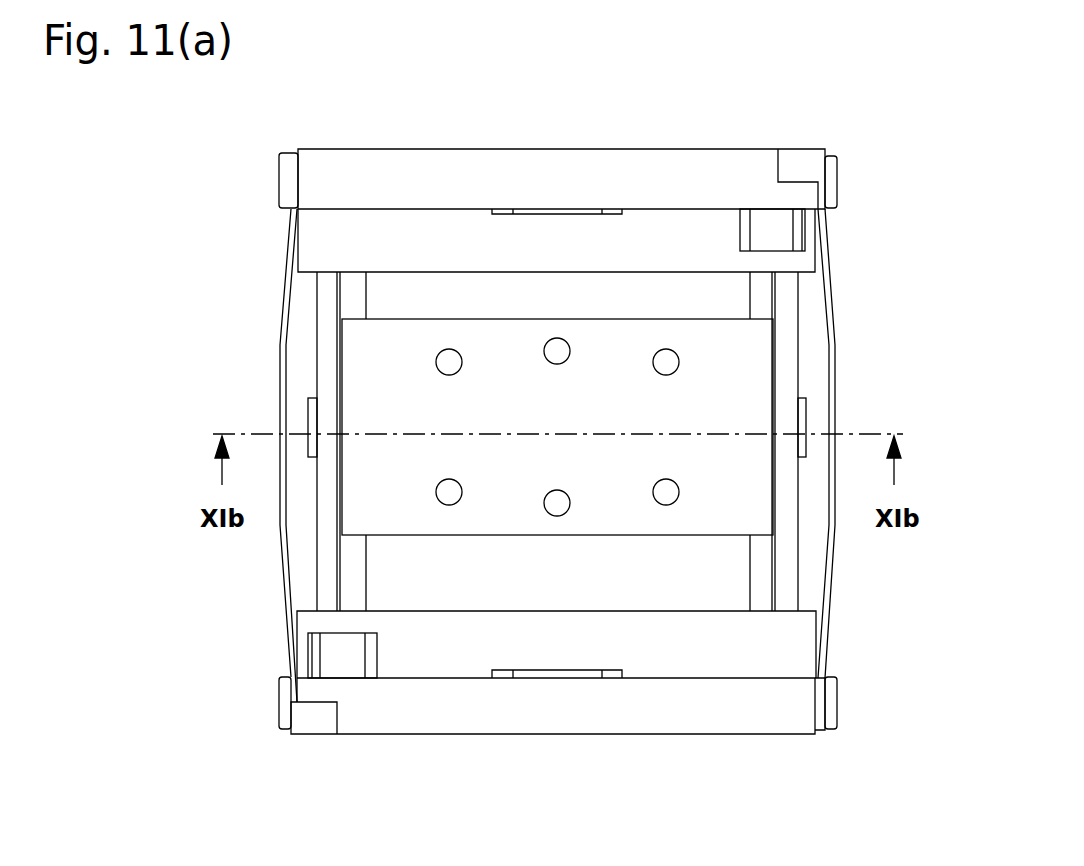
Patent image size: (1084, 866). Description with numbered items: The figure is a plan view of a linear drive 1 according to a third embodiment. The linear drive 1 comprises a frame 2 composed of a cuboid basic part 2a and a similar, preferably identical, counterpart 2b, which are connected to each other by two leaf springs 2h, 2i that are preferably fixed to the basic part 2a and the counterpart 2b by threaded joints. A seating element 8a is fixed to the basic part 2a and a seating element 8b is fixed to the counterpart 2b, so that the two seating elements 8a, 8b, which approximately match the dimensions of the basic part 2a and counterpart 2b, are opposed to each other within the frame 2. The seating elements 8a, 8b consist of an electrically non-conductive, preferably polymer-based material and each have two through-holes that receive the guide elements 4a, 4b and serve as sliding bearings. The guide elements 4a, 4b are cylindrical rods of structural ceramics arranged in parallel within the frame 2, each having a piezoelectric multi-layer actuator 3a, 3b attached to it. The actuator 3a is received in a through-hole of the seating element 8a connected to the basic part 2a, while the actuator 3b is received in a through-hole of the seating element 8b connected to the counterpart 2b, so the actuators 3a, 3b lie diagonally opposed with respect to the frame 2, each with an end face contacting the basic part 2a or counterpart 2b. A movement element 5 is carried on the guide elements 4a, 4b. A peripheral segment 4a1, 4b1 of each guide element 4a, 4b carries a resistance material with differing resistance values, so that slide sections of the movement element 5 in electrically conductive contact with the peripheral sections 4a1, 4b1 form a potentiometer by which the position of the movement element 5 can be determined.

The linear drive 1 is at (222, 210).
The frame 2 is at (402, 765).
The basic part 2a is at (578, 720).
The counterpart 2b is at (462, 165).
The leaf spring 2h is at (278, 380).
The leaf spring 2i is at (837, 385).
The piezoelectric multi-layer actuator 3a is at (333, 655).
The piezoelectric multi-layer actuator 3b is at (775, 225).
The guide element 4a is at (347, 588).
The peripheral segment 4a1 is at (325, 325).
The guide element 4b is at (765, 288).
The peripheral segment 4b1 is at (785, 558).
The movement element 5 is at (616, 355).
The seating element 8a is at (739, 650).
The seating element 8b is at (603, 250).